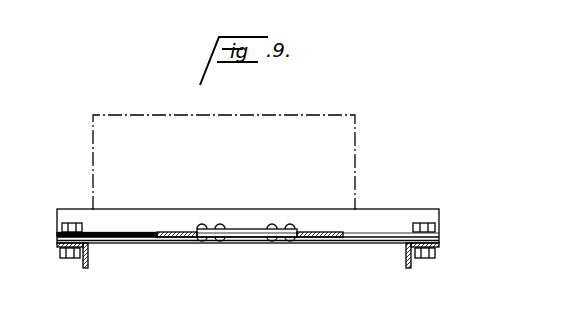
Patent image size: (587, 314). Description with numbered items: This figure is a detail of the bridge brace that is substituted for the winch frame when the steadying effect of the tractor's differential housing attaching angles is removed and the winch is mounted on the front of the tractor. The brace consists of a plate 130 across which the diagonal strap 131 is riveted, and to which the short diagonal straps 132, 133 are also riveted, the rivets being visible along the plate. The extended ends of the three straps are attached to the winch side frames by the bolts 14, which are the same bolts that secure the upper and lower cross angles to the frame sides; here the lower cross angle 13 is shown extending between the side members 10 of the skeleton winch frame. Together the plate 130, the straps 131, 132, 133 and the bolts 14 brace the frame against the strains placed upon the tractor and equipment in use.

The lower cross angle 13 is at (80, 217).
The short diagonal strap 133 is at (381, 237).
The short diagonal strap 132 is at (135, 232).
The plate 130 is at (244, 230).
The diagonal strap 131 is at (321, 233).
The side member 10 is at (88, 262).
The bolt 14 is at (65, 263).